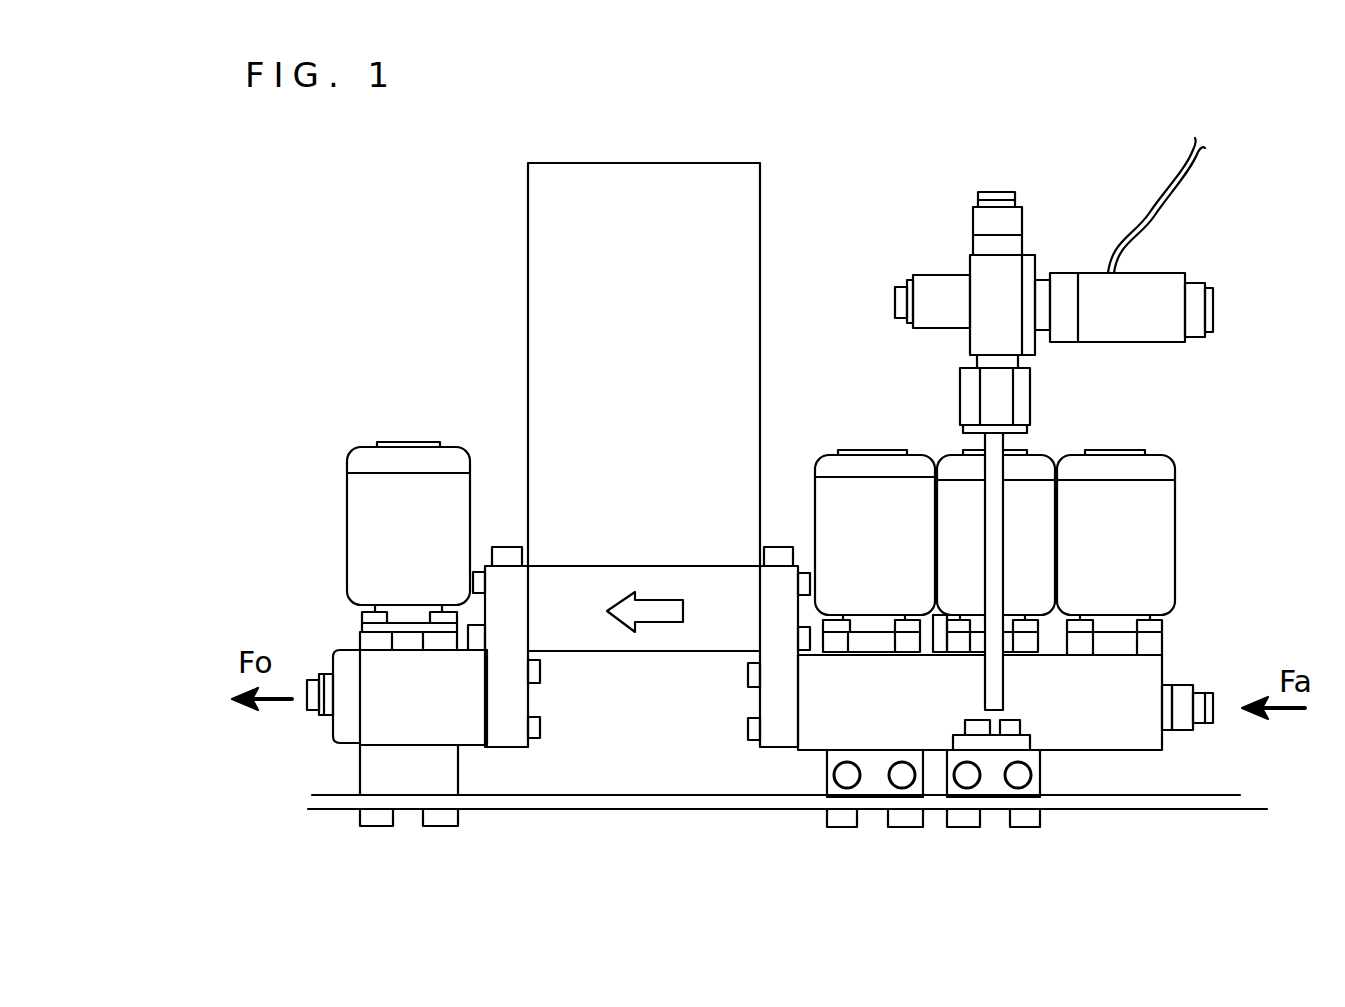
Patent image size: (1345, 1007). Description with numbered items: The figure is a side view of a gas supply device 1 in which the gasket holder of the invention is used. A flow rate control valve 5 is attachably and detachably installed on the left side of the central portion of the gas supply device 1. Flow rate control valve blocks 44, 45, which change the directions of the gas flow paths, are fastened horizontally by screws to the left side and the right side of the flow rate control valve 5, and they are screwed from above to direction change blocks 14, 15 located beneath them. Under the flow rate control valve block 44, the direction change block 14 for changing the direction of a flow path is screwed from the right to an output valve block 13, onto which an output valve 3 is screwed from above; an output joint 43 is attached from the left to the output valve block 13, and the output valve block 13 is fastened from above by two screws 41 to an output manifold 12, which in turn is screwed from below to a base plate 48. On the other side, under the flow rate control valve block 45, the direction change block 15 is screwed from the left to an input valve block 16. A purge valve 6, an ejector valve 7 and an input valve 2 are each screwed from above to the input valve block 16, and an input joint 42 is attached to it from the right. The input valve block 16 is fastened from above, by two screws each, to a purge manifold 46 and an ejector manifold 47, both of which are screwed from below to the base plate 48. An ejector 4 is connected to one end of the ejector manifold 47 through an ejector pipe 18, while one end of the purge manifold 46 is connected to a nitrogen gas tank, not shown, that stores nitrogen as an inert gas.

The gas supply device 1 is at (867, 207).
The input valve 2 is at (1110, 536).
The output valve 3 is at (422, 534).
The ejector 4 is at (1133, 324).
The flow rate control valve 5 is at (652, 233).
The purge valve 6 is at (883, 534).
The ejector valve 7 is at (1042, 533).
The output manifold 12 is at (370, 772).
The output valve block 13 is at (433, 711).
The direction change block 14 is at (507, 712).
The direction change block 15 is at (785, 738).
The input valve block 16 is at (893, 715).
The ejector pipe 18 is at (995, 593).
The screws 41 is at (504, 546).
The input joint 42 is at (1180, 697).
The output joint 43 is at (340, 705).
The flow rate control valve block 44 is at (520, 634).
The flow rate control valve block 45 is at (780, 622).
The purge manifold 46 is at (868, 785).
The ejector manifold 47 is at (990, 785).
The base plate 48 is at (547, 803).